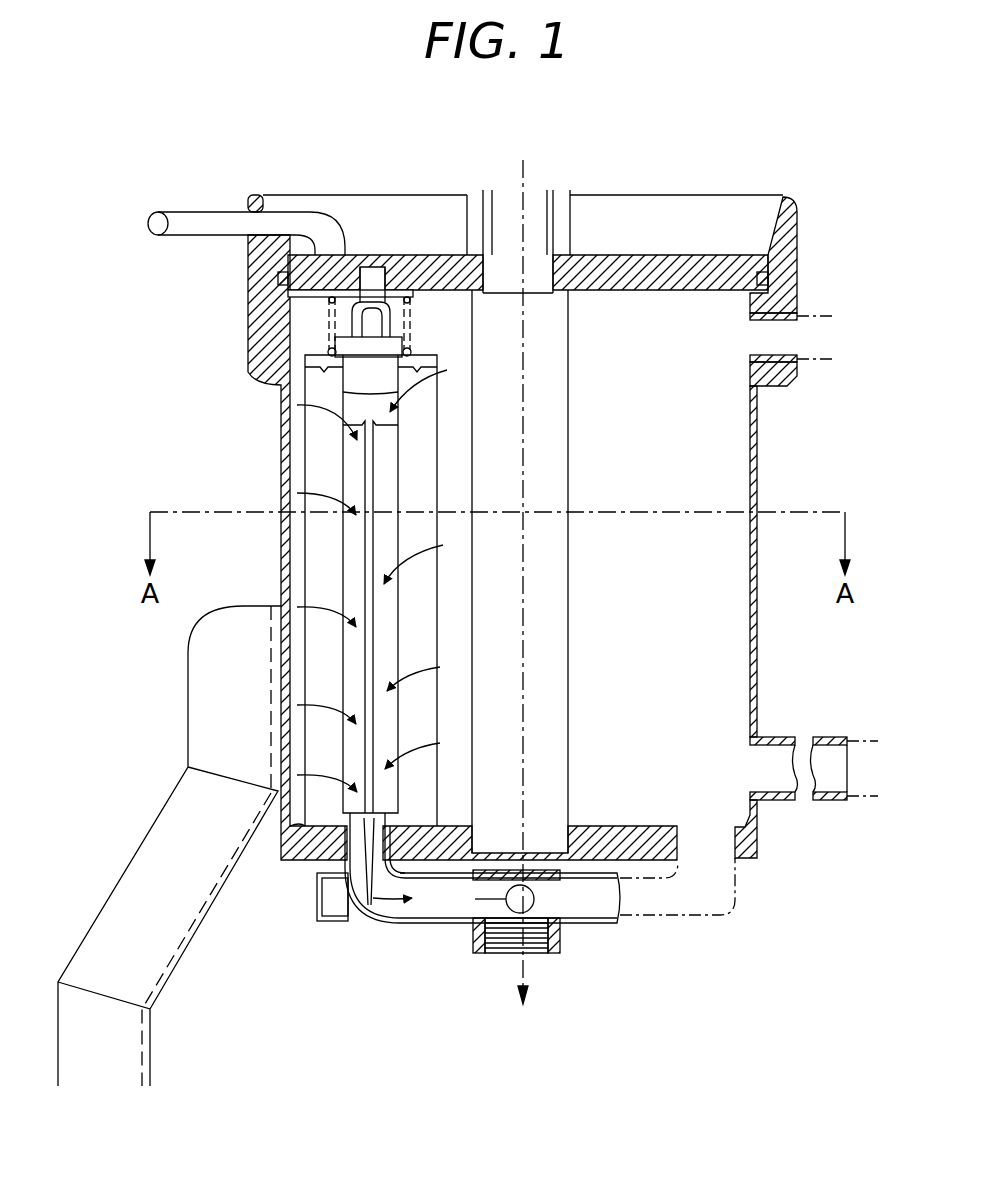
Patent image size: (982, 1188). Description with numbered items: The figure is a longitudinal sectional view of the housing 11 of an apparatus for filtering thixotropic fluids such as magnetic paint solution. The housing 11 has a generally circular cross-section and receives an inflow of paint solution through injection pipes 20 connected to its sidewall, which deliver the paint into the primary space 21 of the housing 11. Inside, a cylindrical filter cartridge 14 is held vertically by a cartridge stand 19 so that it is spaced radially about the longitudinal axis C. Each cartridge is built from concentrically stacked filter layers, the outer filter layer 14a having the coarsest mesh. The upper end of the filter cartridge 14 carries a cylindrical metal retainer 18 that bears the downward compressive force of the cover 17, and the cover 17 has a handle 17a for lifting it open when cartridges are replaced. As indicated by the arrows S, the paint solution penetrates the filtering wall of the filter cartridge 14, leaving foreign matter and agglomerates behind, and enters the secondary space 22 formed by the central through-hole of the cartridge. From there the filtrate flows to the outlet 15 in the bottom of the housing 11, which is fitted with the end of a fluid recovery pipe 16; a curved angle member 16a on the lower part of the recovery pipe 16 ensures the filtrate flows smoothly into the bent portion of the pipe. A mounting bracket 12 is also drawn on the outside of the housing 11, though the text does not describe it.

The housing 11 is at (277, 375).
The mounting bracket 12 is at (203, 669).
The filter cartridge 14 is at (320, 447).
The outer filter layer 14a is at (360, 828).
The outlet 15 is at (408, 818).
The fluid recovery pipe 16 is at (405, 920).
The curved angle member 16a is at (350, 922).
The cover 17 is at (393, 265).
The handle 17a is at (208, 218).
The cylindrical metal retainer 18 is at (413, 297).
The cartridge stand 19 is at (347, 790).
The injection pipe 20 is at (798, 283).
The primary space 21 is at (443, 310).
The secondary space 22 is at (372, 890).
The longitudinal axis C is at (527, 197).
The arrows S is at (440, 515).